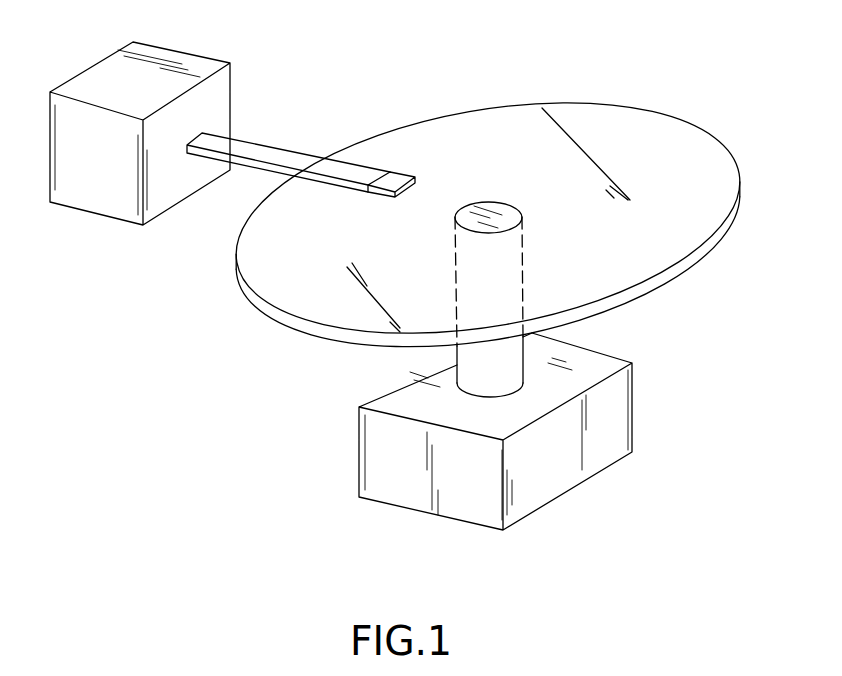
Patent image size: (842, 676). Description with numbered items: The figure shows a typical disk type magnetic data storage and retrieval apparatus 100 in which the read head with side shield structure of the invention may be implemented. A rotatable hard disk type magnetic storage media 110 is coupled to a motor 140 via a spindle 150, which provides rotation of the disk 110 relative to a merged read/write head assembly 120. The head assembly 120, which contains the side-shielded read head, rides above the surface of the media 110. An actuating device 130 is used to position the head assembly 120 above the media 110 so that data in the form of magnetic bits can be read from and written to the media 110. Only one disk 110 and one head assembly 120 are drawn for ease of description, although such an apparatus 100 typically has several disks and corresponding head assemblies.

The data storage and retrieval apparatus 100 is at (192, 297).
The magnetic storage media 110 is at (647, 122).
The merged read/write head assembly 120 is at (400, 180).
The actuating device 130 is at (102, 195).
The motor 140 is at (598, 357).
The spindle 150 is at (457, 358).